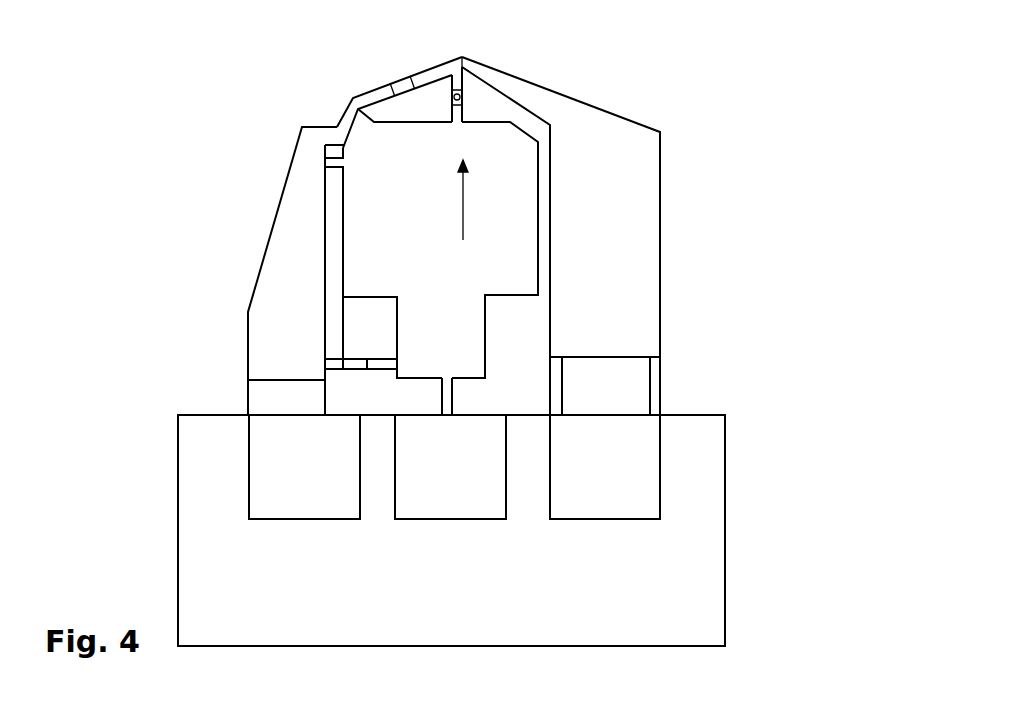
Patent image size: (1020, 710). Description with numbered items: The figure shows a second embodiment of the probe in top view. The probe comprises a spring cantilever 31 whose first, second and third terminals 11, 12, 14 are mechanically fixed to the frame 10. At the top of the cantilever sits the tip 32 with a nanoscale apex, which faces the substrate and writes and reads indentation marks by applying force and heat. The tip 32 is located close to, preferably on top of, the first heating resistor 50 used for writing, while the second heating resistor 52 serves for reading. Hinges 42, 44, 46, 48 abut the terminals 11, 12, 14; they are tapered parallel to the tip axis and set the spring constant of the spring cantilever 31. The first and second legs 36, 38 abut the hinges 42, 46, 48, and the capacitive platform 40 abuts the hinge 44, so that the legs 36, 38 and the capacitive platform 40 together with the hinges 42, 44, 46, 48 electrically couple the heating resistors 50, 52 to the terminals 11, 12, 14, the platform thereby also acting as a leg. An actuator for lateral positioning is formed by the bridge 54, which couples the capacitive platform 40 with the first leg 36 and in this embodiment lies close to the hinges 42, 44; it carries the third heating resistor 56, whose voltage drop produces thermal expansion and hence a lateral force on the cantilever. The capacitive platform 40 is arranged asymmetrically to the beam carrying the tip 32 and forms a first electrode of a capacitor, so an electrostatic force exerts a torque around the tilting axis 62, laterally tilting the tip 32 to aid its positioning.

The frame 10 is at (718, 553).
The first terminal 11 is at (269, 515).
The second terminal 12 is at (445, 512).
The third terminal 14 is at (620, 513).
The spring cantilever 31 is at (252, 182).
The tip 32 is at (465, 97).
The first leg 36 is at (280, 260).
The second leg 38 is at (653, 230).
The capacitive platform 40 is at (510, 296).
The hinge 42 is at (260, 395).
The hinge 44 is at (442, 398).
The hinge 46 is at (568, 397).
The hinge 48 is at (655, 382).
The first heating resistor 50 is at (467, 78).
The second heating resistor 52 is at (398, 82).
The bridge 54 is at (378, 359).
The third heating resistor 56 is at (353, 370).
The tilting axis 62 is at (460, 208).